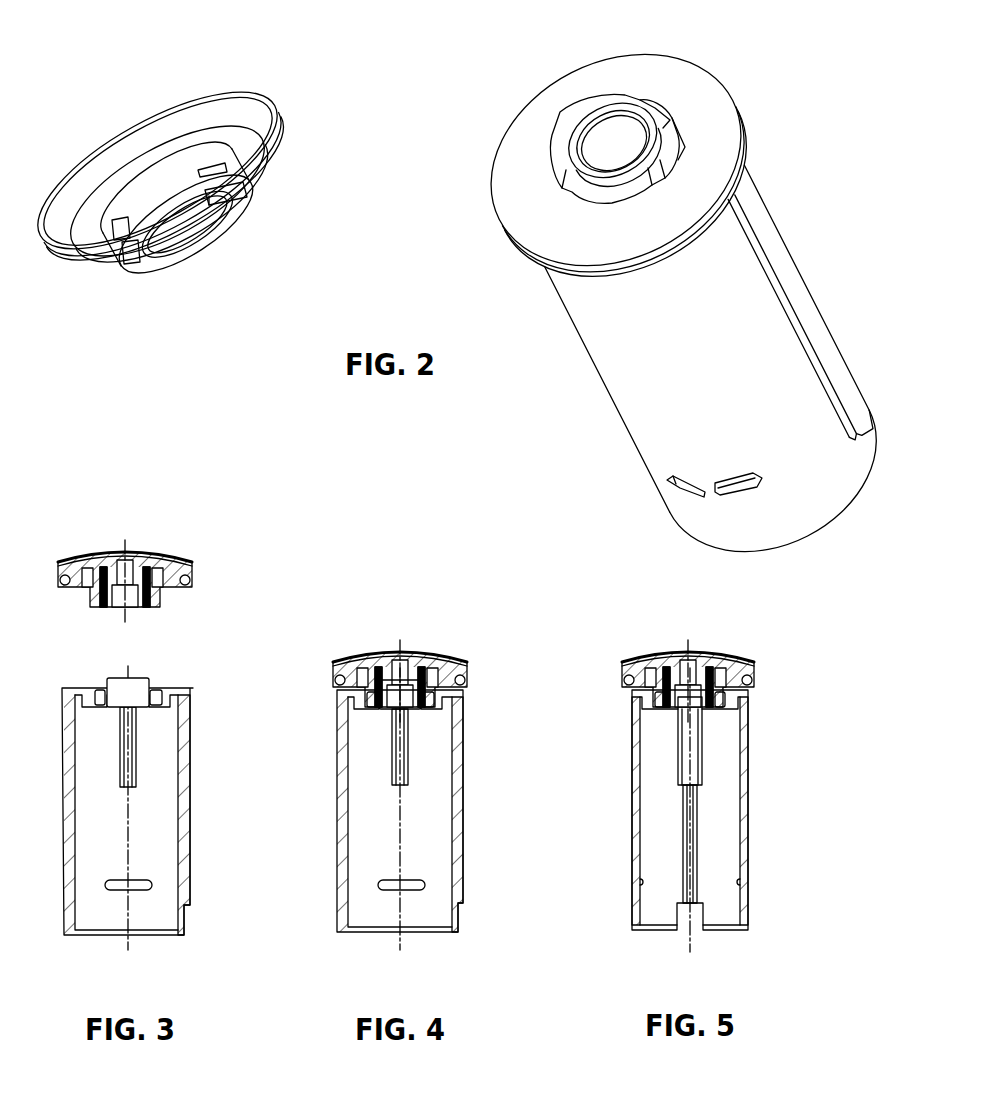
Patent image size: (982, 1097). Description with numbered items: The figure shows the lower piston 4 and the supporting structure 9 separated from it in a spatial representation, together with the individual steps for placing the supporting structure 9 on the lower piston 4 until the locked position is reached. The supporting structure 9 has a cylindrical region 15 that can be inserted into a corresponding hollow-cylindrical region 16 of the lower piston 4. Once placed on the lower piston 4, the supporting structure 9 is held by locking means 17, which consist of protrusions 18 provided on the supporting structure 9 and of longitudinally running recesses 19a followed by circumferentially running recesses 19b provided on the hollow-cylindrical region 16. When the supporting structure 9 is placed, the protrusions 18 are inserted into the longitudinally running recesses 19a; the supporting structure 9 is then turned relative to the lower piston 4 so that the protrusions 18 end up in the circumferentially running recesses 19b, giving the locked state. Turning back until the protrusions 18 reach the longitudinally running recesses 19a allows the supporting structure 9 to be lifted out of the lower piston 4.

In FIG. 2, the lower piston 4 is at (800, 262).
In FIG. 3, the lower piston 4 is at (191, 810).
In FIG. 4, the lower piston 4 is at (465, 812).
In FIG. 5, the lower piston 4 is at (748, 790).
In FIG. 2, the supporting structure 9 is at (195, 100).
In FIG. 3, the supporting structure 9 is at (165, 548).
In FIG. 4, the supporting structure 9 is at (412, 653).
In FIG. 5, the supporting structure 9 is at (705, 665).
In FIG. 2, the cylindrical region 15 is at (162, 262).
In FIG. 2, the hollow-cylindrical region 16 is at (553, 155).
In FIG. 2, the locking means 17 is at (262, 222).
In FIG. 2, the protrusions 18 is at (250, 186).
In FIG. 3, the protrusions 18 is at (77, 600).
In FIG. 4, the protrusions 18 is at (445, 698).
In FIG. 5, the protrusions 18 is at (725, 698).
In FIG. 2, the longitudinally running recesses 19a is at (685, 147).
In FIG. 3, the longitudinally running recesses 19a is at (95, 692).
In FIG. 2, the circumferentially running recesses 19b is at (663, 128).
In FIG. 4, the circumferentially running recesses 19b is at (362, 700).
In FIG. 5, the circumferentially running recesses 19b is at (655, 700).